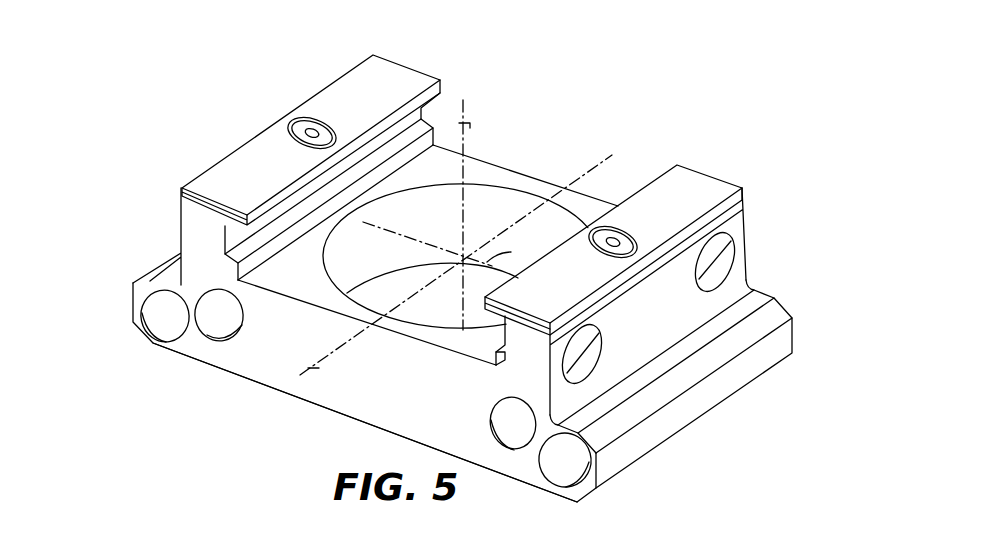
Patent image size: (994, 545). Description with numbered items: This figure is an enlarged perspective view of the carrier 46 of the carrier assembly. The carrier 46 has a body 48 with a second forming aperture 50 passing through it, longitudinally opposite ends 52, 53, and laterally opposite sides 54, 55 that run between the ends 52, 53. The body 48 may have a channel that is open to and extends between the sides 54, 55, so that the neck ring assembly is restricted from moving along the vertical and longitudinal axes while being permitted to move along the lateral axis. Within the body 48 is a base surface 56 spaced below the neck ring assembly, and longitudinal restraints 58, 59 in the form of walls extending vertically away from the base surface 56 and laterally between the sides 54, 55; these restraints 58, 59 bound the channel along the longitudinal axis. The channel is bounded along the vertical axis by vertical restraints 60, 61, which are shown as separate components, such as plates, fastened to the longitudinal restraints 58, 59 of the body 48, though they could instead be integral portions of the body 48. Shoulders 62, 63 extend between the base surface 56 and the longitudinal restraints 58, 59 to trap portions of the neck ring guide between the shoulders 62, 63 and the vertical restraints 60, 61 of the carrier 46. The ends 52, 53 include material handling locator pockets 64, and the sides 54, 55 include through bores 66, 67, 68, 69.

The carrier 46 is at (184, 62).
The body 48 is at (112, 323).
The second forming aperture 50 is at (373, 267).
The end 52 is at (150, 200).
The end 53 is at (778, 402).
The side 54 is at (313, 430).
The side 55 is at (607, 193).
The base surface 56 is at (490, 172).
The longitudinal restraint 58 is at (224, 233).
The longitudinal restraint 59 is at (503, 338).
The vertical restraint 60 is at (457, 77).
The vertical restraint 61 is at (683, 160).
The shoulder 62 is at (437, 124).
The shoulder 63 is at (496, 357).
The material handling locator pocket 64 is at (580, 360).
The through bore 66 is at (158, 341).
The through bore 67 is at (570, 470).
The through bore 68 is at (206, 342).
The through bore 69 is at (512, 450).